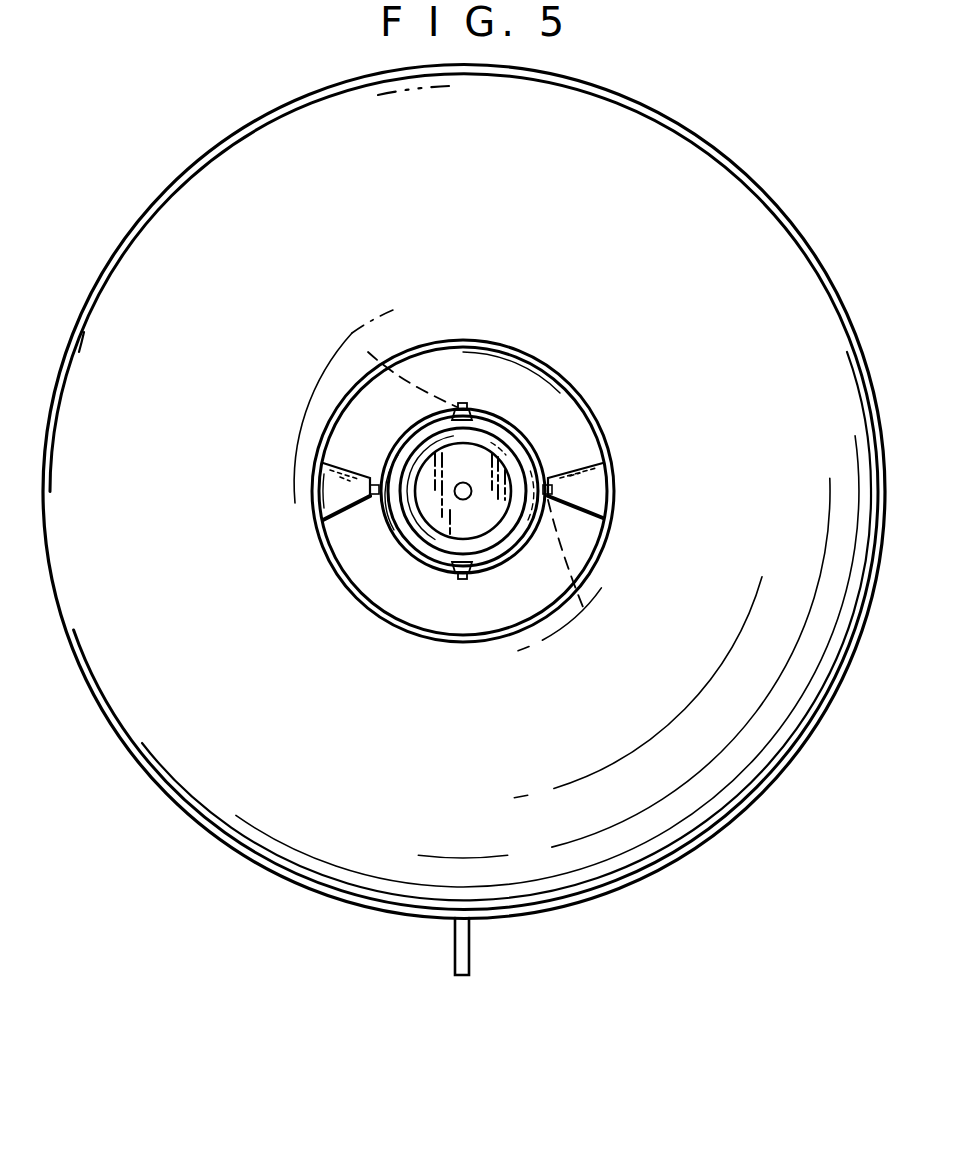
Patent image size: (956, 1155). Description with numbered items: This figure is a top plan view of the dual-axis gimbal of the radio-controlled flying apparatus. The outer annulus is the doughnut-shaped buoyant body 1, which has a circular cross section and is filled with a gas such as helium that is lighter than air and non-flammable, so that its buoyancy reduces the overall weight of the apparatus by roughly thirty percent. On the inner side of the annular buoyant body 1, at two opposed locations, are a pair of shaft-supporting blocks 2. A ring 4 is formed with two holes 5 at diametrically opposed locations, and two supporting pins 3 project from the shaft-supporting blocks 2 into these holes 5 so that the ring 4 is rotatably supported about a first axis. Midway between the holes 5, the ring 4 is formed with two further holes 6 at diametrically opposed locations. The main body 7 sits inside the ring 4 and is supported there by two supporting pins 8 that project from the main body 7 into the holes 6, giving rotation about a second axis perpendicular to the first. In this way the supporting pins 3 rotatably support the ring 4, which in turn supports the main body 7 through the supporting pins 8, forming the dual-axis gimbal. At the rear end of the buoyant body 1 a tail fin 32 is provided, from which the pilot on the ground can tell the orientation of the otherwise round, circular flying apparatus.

The buoyant body 1 is at (703, 183).
The shaft-supporting block 2 is at (570, 520).
The supporting pin 3 is at (555, 468).
The ring 4 is at (520, 550).
The hole 5 is at (584, 604).
The hole 6 is at (368, 352).
The main body 7 is at (492, 447).
The supporting pin 8 is at (462, 404).
The tail fin 32 is at (453, 957).